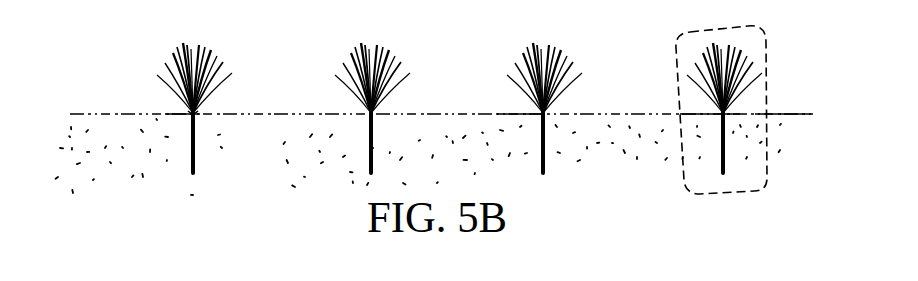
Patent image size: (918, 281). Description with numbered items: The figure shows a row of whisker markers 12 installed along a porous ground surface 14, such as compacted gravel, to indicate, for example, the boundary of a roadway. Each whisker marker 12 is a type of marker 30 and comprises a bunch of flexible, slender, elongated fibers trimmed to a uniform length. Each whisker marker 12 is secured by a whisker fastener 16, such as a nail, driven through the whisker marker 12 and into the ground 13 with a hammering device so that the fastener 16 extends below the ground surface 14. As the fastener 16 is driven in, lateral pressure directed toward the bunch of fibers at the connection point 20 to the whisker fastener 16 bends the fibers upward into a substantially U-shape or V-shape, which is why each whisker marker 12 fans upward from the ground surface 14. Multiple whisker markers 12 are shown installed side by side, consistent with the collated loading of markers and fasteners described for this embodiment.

The whisker marker 12 is at (158, 92).
The ground 13 is at (599, 182).
The ground surface 14 is at (88, 111).
The whisker fastener 16 is at (197, 157).
The connection point 20 is at (197, 116).
The marker 30 is at (764, 188).